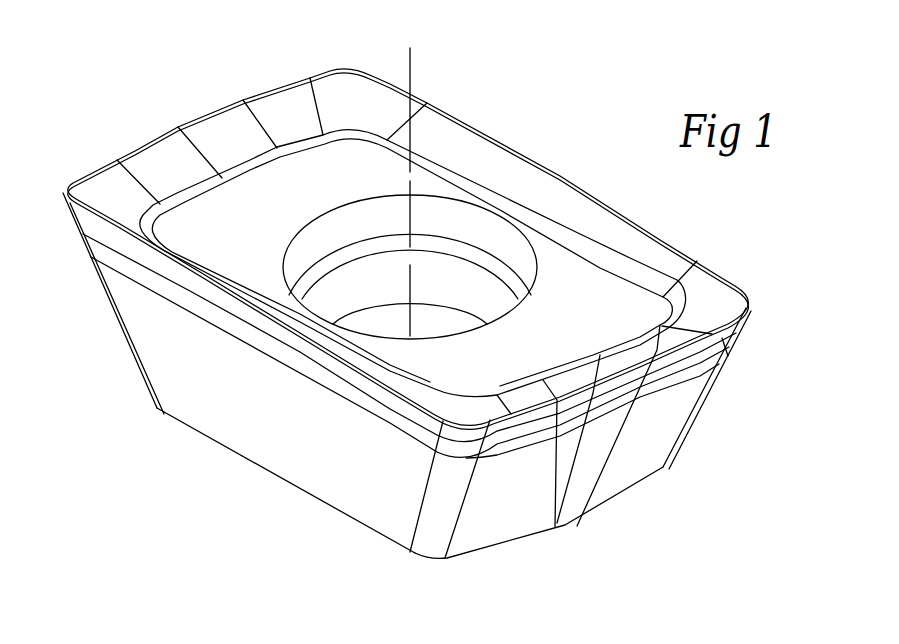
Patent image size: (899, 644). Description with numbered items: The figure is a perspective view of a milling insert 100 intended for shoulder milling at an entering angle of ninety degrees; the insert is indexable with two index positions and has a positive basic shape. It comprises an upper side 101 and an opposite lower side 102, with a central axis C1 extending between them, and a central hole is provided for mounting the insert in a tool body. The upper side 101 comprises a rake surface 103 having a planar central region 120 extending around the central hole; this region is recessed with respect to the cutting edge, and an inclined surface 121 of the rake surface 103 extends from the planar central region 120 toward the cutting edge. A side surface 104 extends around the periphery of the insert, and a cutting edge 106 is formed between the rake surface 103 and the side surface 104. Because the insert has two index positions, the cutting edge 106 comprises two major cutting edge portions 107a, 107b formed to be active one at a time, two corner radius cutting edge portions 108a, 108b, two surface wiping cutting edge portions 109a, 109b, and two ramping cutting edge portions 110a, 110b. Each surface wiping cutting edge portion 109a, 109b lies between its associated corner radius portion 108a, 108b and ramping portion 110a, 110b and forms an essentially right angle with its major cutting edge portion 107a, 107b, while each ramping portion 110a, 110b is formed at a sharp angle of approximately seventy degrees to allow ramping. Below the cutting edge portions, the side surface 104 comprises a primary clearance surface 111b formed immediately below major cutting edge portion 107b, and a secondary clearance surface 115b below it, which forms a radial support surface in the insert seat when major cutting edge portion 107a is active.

The milling insert 100 is at (178, 68).
The upper side 101 is at (361, 96).
The lower side 102 is at (287, 500).
The rake surface 103 is at (330, 163).
The side surface 104 is at (317, 434).
The cutting edge 106 is at (683, 242).
The major cutting edge portion 107a is at (637, 223).
The major cutting edge portion 107b is at (162, 257).
The corner radius cutting edge portion 108a is at (750, 300).
The corner radius cutting edge portion 108b is at (68, 186).
The surface wiping cutting edge portion 109a is at (710, 337).
The surface wiping cutting edge portion 109b is at (128, 143).
The ramping cutting edge portion 110a is at (537, 410).
The ramping cutting edge portion 110b is at (252, 93).
The primary clearance surface 111b is at (190, 287).
The secondary clearance surface 115b is at (203, 380).
The planar central region 120 is at (260, 231).
The inclined surface 121 is at (477, 155).
The central axis C1 is at (425, 192).